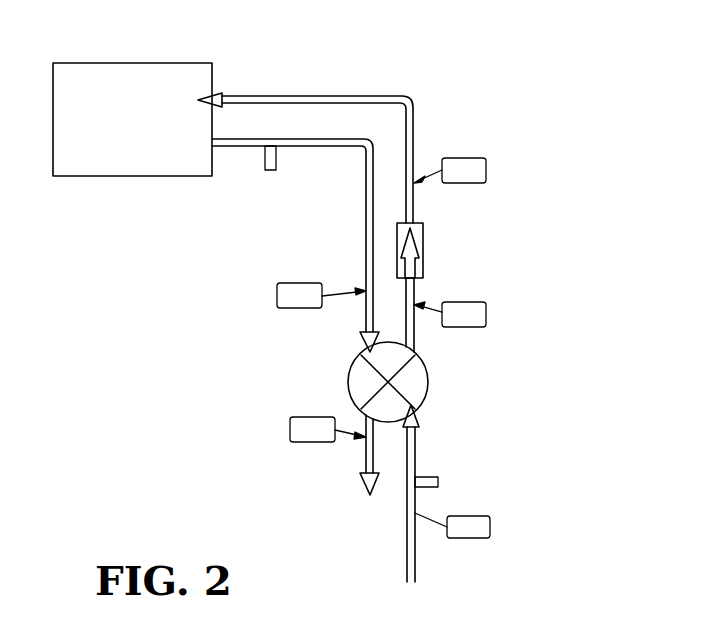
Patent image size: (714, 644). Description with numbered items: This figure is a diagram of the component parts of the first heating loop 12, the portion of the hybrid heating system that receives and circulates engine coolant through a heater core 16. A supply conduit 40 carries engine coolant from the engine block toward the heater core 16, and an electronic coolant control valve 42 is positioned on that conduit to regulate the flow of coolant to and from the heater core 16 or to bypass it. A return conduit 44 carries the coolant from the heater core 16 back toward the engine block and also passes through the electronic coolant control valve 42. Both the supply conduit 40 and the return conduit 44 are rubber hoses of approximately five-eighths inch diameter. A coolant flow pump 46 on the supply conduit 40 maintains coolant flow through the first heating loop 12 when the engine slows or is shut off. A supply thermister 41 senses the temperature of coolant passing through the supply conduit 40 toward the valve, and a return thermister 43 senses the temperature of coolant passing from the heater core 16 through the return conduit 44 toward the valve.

The first heating loop 12 is at (441, 88).
The heater core 16 is at (78, 74).
The supply conduit 40 is at (414, 200).
The supply thermister 41 is at (432, 477).
The electronic coolant control valve 42 is at (428, 366).
The return thermister 43 is at (265, 161).
The return conduit 44 is at (366, 220).
The coolant flow pump 46 is at (423, 272).